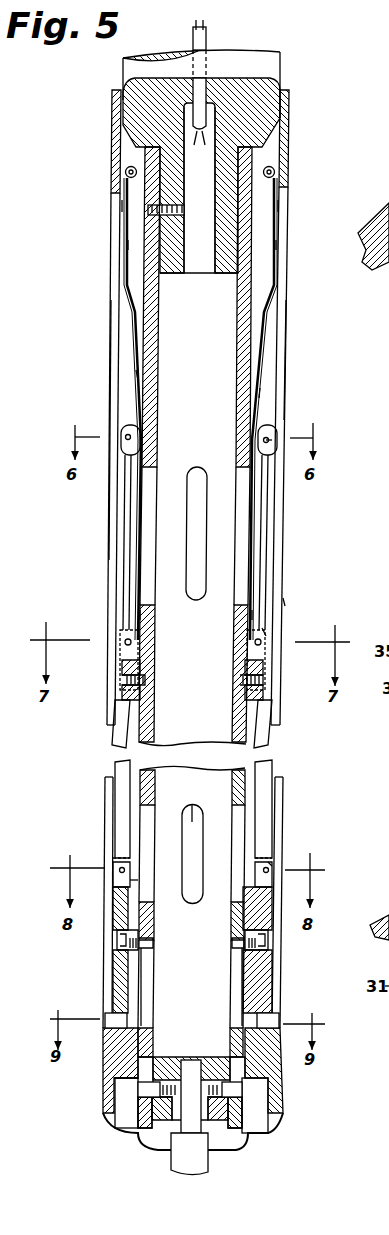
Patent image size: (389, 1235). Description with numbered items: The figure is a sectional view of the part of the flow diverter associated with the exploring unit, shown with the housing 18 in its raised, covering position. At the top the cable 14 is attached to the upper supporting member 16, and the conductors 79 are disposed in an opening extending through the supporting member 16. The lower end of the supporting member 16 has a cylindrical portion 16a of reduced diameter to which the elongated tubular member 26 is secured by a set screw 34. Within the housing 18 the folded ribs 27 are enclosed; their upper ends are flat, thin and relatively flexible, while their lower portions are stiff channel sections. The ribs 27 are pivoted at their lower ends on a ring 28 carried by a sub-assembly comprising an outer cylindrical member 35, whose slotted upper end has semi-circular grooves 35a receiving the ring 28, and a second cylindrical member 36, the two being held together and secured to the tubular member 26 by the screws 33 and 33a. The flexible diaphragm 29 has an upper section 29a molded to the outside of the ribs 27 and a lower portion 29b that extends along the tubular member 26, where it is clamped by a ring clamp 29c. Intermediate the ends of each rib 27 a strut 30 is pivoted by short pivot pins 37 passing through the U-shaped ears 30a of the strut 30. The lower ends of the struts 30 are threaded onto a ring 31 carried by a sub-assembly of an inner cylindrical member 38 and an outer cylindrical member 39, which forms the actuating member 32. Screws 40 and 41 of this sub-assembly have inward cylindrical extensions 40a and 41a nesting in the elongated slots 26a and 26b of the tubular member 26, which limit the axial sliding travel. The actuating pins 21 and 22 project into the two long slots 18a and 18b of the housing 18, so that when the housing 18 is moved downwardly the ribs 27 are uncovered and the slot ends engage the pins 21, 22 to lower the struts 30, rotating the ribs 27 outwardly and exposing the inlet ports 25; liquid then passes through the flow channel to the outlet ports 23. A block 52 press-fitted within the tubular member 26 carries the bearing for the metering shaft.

The cable 14 is at (207, 47).
The upper supporting member 16 is at (272, 62).
The cylindrical portion of reduced diameter 16a is at (220, 282).
The housing 18 is at (290, 153).
The slot 18a is at (113, 533).
The slot 18b is at (284, 405).
The pin 21 is at (270, 1016).
The pin 22 is at (105, 1018).
The outlet ports 23 is at (233, 828).
The inlet ports 25 is at (238, 531).
The tubular member 26 is at (172, 300).
The elongated slot 26a is at (147, 1004).
The elongated slot 26b is at (235, 975).
The ribs 27 is at (135, 210).
The ring 28 is at (265, 634).
The flexible diaphragm 29 is at (257, 495).
The upper section of diaphragm 29a is at (128, 245).
The lower portion of diaphragm 29b is at (138, 375).
The ring clamp 29c is at (265, 616).
The strut 30 is at (122, 813).
The U-shaped ears 30a is at (126, 428).
The ring 31 is at (268, 866).
The actuating member 32 is at (263, 902).
The set screw 33 is at (127, 686).
The set screw 33a is at (258, 683).
The set screw 34 is at (150, 213).
The outer cylindrical member 35 is at (260, 706).
The semi-circular groove 35a is at (388, 606).
The second cylindrical member 36 is at (285, 601).
The pivot pins 37 is at (271, 440).
The inner cylindrical member 38 is at (133, 886).
The outer cylindrical member 39 is at (117, 900).
The screw 40 is at (115, 950).
The cylindrical extension 40a is at (141, 946).
The screw 41 is at (265, 955).
The cylindrical extension 41a is at (233, 950).
The block 52 is at (163, 1058).
The conductors 79 is at (194, 30).